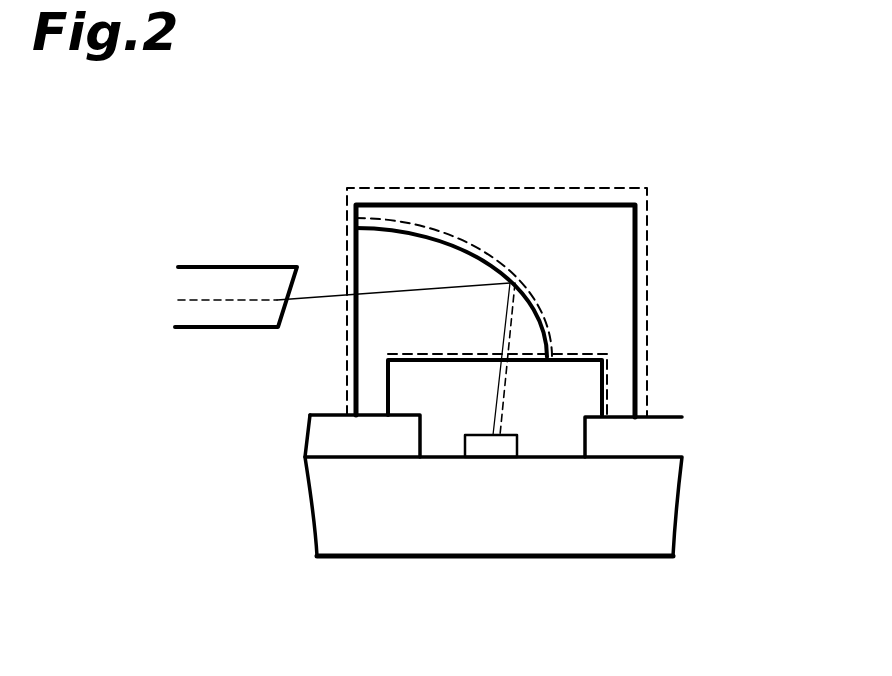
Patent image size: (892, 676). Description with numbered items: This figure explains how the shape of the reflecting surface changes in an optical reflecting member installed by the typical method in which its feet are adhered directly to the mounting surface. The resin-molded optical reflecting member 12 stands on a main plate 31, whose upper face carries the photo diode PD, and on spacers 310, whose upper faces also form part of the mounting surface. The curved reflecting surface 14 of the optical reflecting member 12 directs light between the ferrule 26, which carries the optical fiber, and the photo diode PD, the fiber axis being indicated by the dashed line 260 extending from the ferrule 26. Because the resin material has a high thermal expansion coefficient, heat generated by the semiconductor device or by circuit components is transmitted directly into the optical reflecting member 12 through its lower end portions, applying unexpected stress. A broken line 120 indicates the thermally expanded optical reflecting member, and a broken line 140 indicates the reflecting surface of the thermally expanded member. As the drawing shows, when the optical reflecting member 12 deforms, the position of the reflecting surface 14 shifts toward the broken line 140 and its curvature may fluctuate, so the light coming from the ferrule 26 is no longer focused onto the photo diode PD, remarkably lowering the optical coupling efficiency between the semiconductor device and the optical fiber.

The optical reflecting member 12 is at (588, 279).
The broken line indicating thermally expanded optical reflecting member 120 is at (652, 208).
The reflecting surface 14 is at (403, 232).
The broken line indicating reflecting surface of thermally expanded optical reflecti 140 is at (482, 247).
The ferrule 26 is at (265, 267).
The optical fiber axis 260 is at (188, 292).
The main plate 31 is at (640, 520).
The spacers 310 is at (645, 428).
The photo diode PD is at (487, 448).